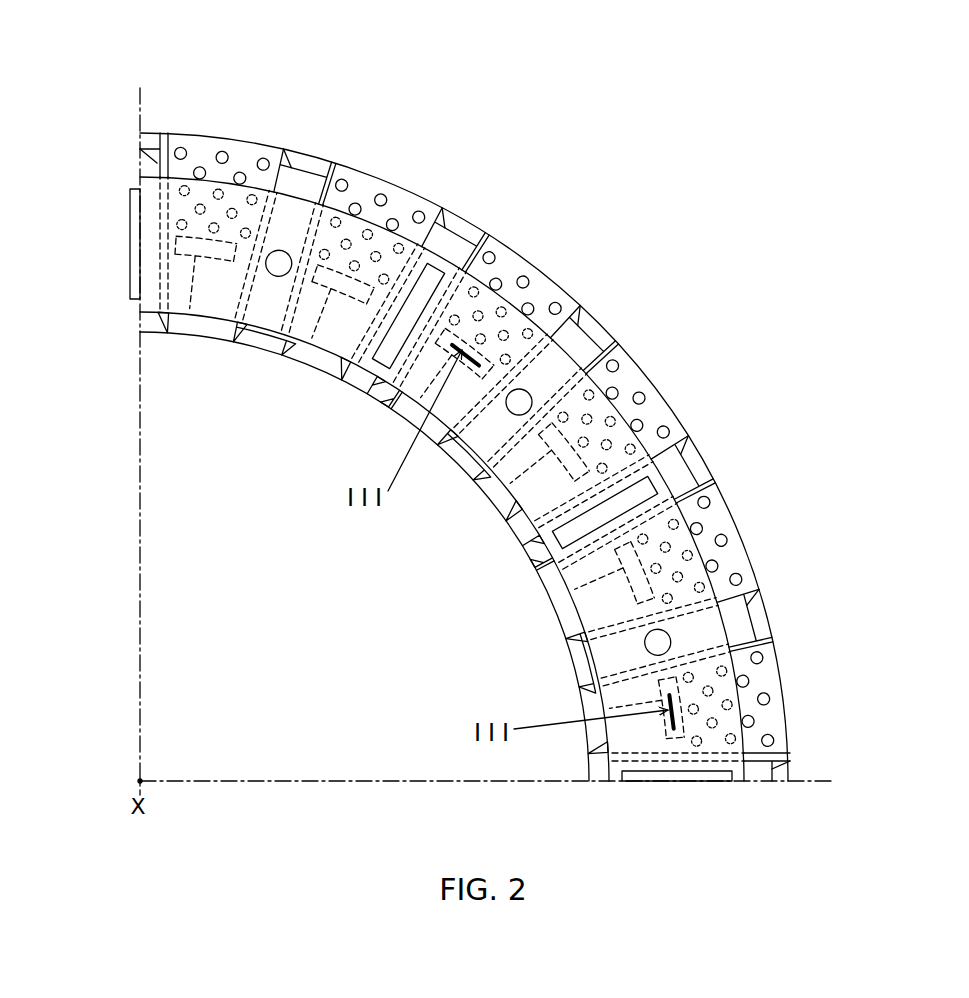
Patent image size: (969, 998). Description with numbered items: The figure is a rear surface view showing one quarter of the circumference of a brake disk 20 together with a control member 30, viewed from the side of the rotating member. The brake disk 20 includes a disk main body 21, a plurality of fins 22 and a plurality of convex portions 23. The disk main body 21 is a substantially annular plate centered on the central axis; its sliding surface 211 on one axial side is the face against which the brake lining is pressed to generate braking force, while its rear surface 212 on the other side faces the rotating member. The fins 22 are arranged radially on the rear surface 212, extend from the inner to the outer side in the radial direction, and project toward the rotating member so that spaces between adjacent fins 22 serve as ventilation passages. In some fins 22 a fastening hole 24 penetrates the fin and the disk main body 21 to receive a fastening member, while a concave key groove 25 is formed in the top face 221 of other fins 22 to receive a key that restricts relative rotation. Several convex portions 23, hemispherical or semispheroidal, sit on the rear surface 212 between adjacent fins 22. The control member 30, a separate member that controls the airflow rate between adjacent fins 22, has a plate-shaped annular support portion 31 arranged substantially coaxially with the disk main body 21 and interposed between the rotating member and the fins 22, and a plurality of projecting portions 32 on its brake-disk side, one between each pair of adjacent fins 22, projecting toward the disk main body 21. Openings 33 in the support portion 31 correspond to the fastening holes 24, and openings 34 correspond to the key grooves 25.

The brake disk 20 is at (463, 436).
The disk main body 21 is at (464, 420).
The sliding surface 211 is at (207, 127).
The rear surface 212 is at (243, 138).
The fin 22 is at (136, 158).
The top face 221 is at (140, 137).
The convex portion 23 is at (775, 740).
The fastening hole 24 is at (290, 252).
The key groove 25 is at (138, 222).
The control member 30 is at (542, 258).
The support portion 31 is at (562, 303).
The projecting portion 32 is at (173, 324).
The opening 33 is at (265, 277).
The opening 34 is at (140, 237).